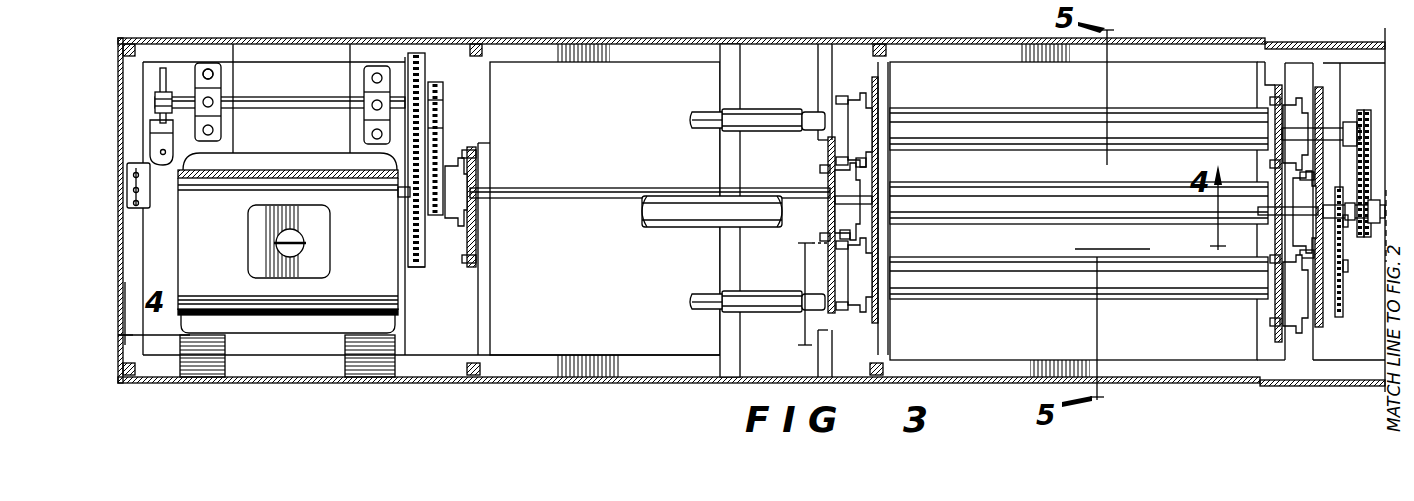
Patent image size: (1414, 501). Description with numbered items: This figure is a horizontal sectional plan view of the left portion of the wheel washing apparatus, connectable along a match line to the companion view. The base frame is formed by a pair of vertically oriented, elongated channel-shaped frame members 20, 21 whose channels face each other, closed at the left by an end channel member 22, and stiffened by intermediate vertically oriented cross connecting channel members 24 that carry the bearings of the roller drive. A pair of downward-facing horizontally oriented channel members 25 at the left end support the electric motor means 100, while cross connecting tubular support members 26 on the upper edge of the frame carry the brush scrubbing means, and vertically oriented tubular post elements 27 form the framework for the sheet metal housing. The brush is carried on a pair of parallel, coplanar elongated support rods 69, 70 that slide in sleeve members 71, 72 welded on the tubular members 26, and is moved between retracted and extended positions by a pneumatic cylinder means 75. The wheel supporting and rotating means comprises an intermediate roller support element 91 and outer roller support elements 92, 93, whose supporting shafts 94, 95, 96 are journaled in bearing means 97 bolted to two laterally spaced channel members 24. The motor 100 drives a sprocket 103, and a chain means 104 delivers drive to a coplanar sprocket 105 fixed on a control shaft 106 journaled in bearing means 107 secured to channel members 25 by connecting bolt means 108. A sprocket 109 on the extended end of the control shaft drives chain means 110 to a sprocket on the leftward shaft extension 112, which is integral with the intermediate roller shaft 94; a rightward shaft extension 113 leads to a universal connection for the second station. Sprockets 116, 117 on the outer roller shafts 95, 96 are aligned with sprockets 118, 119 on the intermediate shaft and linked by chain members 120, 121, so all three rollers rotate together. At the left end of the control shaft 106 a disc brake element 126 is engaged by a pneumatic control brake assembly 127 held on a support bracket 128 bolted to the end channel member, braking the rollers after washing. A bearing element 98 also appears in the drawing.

The elongated channel-shaped frame member 20 is at (1178, 366).
The elongated channel-shaped frame member 21 is at (1179, 50).
The end channel member 22 is at (135, 100).
The intermediate cross connecting channel member 24 is at (480, 305).
The horizontally oriented channel member 25 is at (207, 368).
The cross connecting tubular support member 26 is at (728, 380).
The vertically oriented tubular post element 27 is at (130, 44).
The elongated support rod 69 is at (700, 128).
The elongated support rod 70 is at (700, 310).
The sleeve member 71 is at (778, 112).
The sleeve member 72 is at (774, 292).
The pneumatic cylinder means 75 is at (690, 215).
The intermediate roller support element 91 is at (1038, 190).
The outer roller support element 92 is at (1044, 120).
The outer roller support element 93 is at (1040, 262).
The supporting shaft 94 is at (876, 199).
The supporting shaft 95 is at (1332, 130).
The supporting shaft 96 is at (1299, 211).
The bearing means 97 is at (460, 226).
The bearing block 98 is at (866, 90).
The electric motor means 100 is at (305, 185).
The sprocket 103 is at (420, 268).
The chain means 104 is at (405, 190).
The sprocket 105 is at (420, 78).
The control shaft 106 is at (290, 100).
The bearing means 107 is at (222, 116).
The connecting bolt means 108 is at (214, 73).
The sprocket 109 is at (440, 102).
The chain means 110 is at (440, 128).
The shaft extension 112 is at (548, 188).
The shaft extension 113 is at (1375, 210).
The sprocket 116 is at (1362, 120).
The sprocket 117 is at (1344, 296).
The sprocket 118 is at (1355, 208).
The sprocket 119 is at (1346, 240).
The chain member 120 is at (1370, 142).
The chain member 121 is at (1346, 268).
The disc brake element 126 is at (170, 90).
The pneumatic control brake assembly 127 is at (160, 165).
The support bracket 128 is at (150, 205).